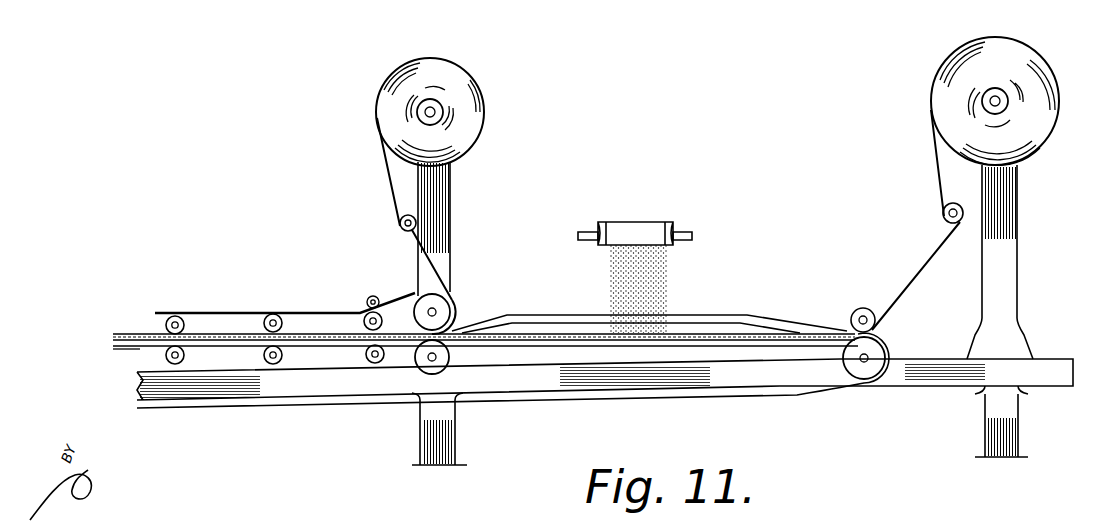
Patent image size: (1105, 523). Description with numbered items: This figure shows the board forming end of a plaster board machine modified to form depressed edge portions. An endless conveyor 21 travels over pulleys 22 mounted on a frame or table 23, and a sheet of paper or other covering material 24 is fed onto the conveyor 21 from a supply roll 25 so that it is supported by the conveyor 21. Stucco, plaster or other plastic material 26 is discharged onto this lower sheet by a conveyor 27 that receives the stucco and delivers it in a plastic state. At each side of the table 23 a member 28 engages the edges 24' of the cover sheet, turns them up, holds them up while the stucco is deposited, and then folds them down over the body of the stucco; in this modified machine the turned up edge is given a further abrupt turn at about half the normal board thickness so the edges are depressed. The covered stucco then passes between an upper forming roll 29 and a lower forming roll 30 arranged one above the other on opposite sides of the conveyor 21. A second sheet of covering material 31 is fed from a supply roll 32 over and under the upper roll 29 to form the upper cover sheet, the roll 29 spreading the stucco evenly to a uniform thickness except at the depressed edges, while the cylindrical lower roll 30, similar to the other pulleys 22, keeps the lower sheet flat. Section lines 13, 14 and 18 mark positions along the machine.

The section line 13 is at (397, 440).
The section line 14 is at (318, 437).
The section line 18 is at (470, 428).
The endless conveyor 21 is at (797, 396).
The pulleys 22 is at (163, 357).
The frame or table 23 is at (940, 378).
The covering material 24 is at (907, 221).
The edges of the cover sheet 24' is at (484, 307).
The supply roll 25 is at (1050, 140).
The plastic material 26 is at (657, 282).
The conveyor 27 is at (676, 223).
The member 28 is at (768, 314).
The upper forming roll 29 is at (442, 308).
The lower forming roll 30 is at (440, 372).
The covering material 31 is at (390, 190).
The supply roll 32 is at (487, 130).